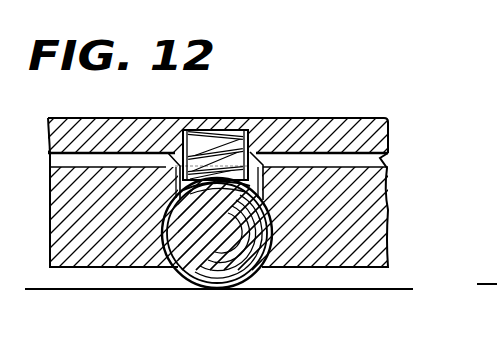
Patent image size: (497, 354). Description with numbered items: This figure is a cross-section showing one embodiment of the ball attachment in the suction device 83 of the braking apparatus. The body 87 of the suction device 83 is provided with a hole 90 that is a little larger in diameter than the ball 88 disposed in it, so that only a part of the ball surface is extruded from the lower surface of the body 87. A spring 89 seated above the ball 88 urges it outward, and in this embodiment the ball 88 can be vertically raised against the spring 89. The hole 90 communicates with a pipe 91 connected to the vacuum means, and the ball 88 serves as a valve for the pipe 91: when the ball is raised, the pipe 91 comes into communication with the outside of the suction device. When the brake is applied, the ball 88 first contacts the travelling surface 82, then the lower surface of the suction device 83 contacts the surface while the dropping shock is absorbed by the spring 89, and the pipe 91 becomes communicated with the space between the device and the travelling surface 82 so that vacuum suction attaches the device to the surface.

The travelling surface 82 is at (403, 285).
The suction device 83 is at (248, 168).
The body 87 is at (320, 122).
The ball 88 is at (206, 241).
The spring 89 is at (222, 143).
The hole 90 is at (275, 204).
The pipe 91 is at (357, 163).